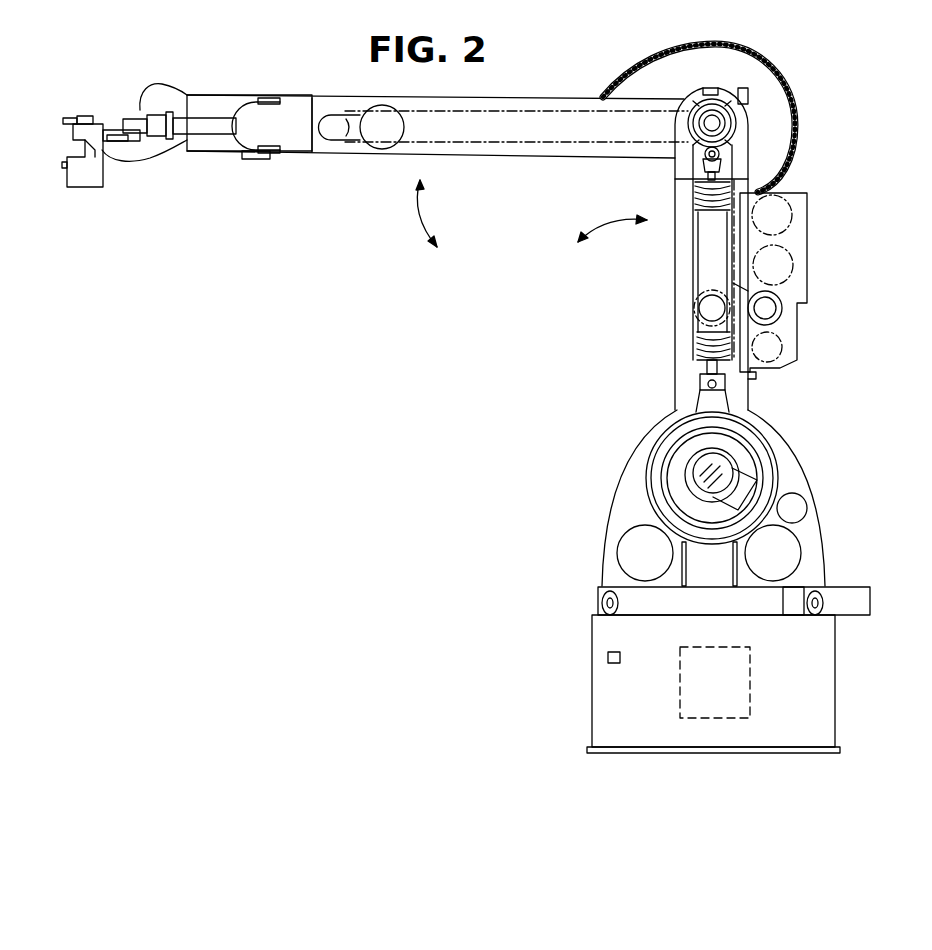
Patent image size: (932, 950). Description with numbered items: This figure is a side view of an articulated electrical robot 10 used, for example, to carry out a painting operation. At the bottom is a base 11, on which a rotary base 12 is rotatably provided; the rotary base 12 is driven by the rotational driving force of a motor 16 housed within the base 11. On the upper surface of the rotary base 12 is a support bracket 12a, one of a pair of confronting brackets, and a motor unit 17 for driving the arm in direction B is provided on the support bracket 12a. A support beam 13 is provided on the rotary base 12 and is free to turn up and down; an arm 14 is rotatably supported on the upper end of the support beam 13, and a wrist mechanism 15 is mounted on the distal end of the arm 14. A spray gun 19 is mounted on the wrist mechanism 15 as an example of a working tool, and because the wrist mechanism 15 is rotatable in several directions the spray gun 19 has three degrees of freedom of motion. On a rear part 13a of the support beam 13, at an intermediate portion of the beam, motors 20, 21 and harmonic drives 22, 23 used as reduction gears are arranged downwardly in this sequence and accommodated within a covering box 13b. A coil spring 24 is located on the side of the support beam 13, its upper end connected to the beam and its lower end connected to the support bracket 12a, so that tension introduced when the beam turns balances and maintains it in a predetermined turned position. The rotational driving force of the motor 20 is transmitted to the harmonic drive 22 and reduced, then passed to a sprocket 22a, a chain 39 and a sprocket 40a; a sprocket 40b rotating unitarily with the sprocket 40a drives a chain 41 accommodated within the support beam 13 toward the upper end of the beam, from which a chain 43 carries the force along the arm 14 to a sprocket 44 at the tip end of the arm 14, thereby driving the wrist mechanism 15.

The articulated electrical robot 10 is at (338, 58).
The base 11 is at (828, 673).
The rotary base 12 is at (867, 608).
The support bracket 12a is at (622, 495).
The support beam 13 is at (675, 323).
The rear part of the support beam 13a is at (752, 378).
The covering box 13b is at (808, 237).
The arm 14 is at (498, 100).
The wrist mechanism 15 is at (297, 103).
The motor 16 is at (682, 690).
The motor unit 17 is at (700, 470).
The spray gun 19 is at (75, 188).
The motor 20 is at (792, 212).
The motor 21 is at (793, 268).
The harmonic drive 22 is at (782, 313).
The sprocket 22a is at (786, 297).
The harmonic drive 23 is at (782, 348).
The coil spring 24 is at (693, 197).
The chain 39 is at (745, 290).
The sprocket 40a is at (698, 308).
The sprocket 40b is at (697, 330).
The chain 41 is at (693, 242).
The chain 43 is at (495, 158).
The sprocket 44 is at (327, 147).